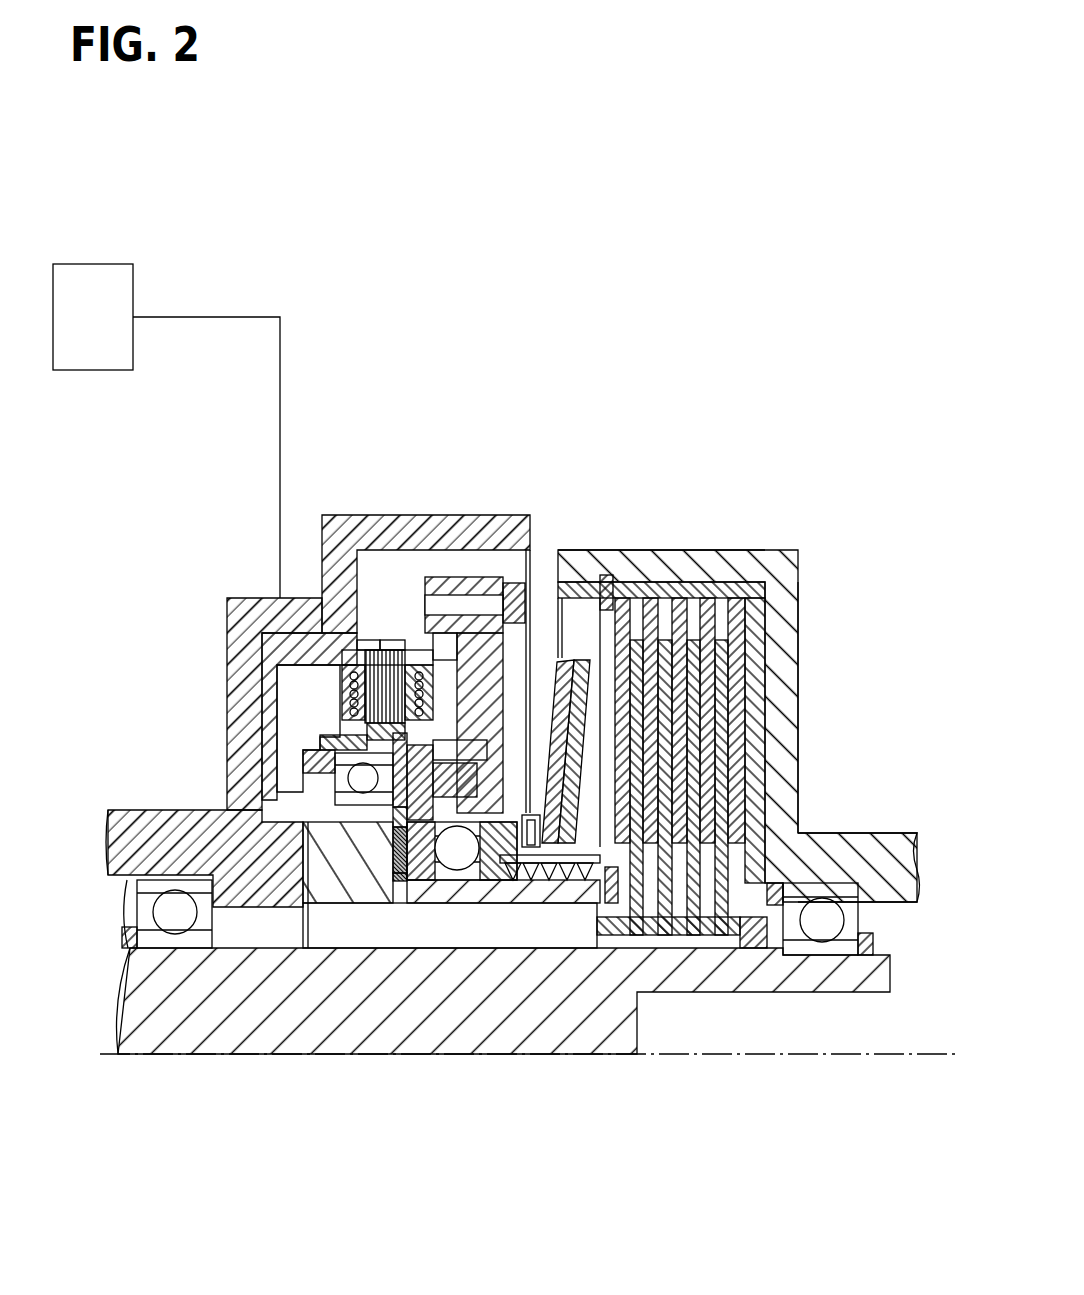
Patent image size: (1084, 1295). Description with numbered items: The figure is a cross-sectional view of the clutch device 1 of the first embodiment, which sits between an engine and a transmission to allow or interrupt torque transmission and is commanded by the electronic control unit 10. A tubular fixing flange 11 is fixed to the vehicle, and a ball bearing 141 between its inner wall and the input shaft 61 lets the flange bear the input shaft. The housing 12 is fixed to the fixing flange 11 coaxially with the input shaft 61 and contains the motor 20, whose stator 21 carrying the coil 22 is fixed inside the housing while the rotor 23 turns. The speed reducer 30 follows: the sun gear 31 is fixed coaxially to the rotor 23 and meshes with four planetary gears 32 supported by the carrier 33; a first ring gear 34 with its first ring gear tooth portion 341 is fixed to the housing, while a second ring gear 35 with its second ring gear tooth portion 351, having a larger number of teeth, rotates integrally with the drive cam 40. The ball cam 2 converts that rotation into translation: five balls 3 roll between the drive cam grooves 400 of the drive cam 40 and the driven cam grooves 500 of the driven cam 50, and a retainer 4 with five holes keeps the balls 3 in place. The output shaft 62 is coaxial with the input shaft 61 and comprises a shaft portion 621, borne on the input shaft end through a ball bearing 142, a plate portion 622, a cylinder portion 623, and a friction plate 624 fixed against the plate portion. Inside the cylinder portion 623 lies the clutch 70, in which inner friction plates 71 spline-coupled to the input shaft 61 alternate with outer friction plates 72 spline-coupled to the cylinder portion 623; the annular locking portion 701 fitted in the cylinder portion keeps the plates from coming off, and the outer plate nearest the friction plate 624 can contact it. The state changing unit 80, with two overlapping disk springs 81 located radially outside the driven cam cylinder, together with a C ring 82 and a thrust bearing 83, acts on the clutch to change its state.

The clutch device 1 is at (615, 308).
The ball cam 2 is at (437, 903).
The balls 3 is at (350, 850).
The retainer 4 is at (457, 872).
The electronic control unit 10 is at (105, 270).
The fixing flange 11 is at (226, 606).
The housing 12 is at (318, 597).
The motor 20 is at (367, 727).
The stator 21 is at (342, 703).
The coil 22 is at (342, 680).
The rotor 23 is at (320, 747).
The speed reducer 30 is at (432, 640).
The sun gear 31 is at (320, 790).
The planetary gears 32 is at (335, 778).
The carrier 33 is at (335, 757).
The first ring gear 34 is at (445, 600).
The second ring gear 35 is at (506, 600).
The drive cam 40 is at (393, 838).
The driven cam 50 is at (383, 880).
The input shaft 61 is at (125, 985).
The output shaft 62 is at (905, 870).
The clutch 70 is at (690, 590).
The inner friction plates 71 is at (693, 936).
The outer friction plates 72 is at (708, 600).
The state changing unit 80 is at (566, 639).
The disk springs 81 is at (553, 662).
The C ring 82 is at (570, 882).
The thrust bearing 83 is at (523, 882).
The ball bearing 141 is at (175, 912).
The ball bearing 142 is at (830, 915).
The first ring gear tooth portion 341 is at (390, 640).
The second ring gear tooth portion 351 is at (364, 640).
The drive cam grooves 400 is at (298, 820).
The driven cam grooves 500 is at (390, 870).
The shaft portion 621 is at (870, 840).
The plate portion 622 is at (800, 728).
The cylinder portion 623 is at (657, 560).
The friction plate 624 is at (762, 705).
The locking portion 701 is at (608, 575).